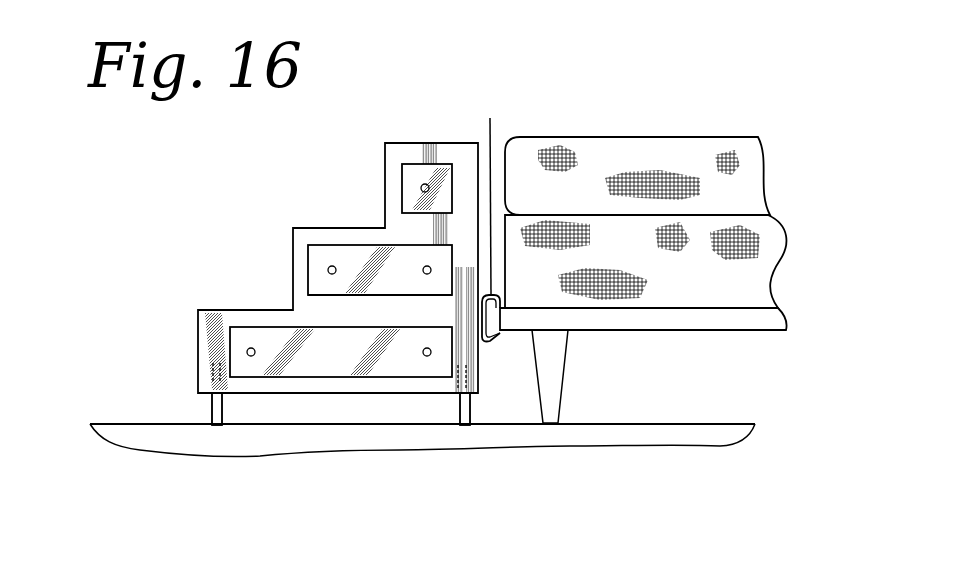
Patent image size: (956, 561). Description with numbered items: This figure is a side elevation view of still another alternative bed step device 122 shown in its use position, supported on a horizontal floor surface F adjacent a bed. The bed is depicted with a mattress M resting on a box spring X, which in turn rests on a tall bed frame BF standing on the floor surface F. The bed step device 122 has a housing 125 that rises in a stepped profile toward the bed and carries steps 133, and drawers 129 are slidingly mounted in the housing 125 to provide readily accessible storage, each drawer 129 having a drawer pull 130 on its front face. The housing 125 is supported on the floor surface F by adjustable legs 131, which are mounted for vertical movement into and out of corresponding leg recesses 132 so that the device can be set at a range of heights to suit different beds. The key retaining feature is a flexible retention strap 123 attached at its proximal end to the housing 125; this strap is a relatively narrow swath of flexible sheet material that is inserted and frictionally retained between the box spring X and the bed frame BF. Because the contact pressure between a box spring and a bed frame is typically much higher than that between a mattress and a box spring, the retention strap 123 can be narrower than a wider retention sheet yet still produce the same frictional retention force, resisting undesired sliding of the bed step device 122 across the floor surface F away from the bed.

The bed step device 122 is at (248, 178).
The flexible retention strap 123 is at (488, 118).
The housing 125 is at (382, 326).
The drawers 129 is at (410, 170).
The drawer pulls 130 is at (421, 186).
The adjustable legs 131 is at (212, 410).
The leg recesses 132 is at (212, 380).
The steps 133 is at (410, 143).
The mattress M is at (589, 207).
The box spring X is at (707, 297).
The bed frame BF is at (635, 318).
The floor surface F is at (667, 435).